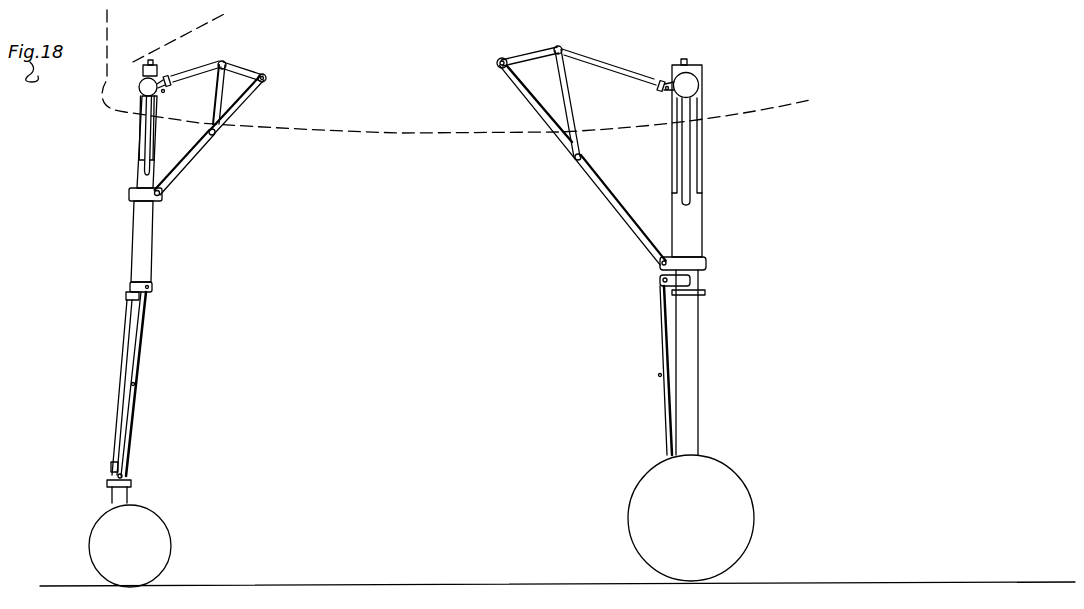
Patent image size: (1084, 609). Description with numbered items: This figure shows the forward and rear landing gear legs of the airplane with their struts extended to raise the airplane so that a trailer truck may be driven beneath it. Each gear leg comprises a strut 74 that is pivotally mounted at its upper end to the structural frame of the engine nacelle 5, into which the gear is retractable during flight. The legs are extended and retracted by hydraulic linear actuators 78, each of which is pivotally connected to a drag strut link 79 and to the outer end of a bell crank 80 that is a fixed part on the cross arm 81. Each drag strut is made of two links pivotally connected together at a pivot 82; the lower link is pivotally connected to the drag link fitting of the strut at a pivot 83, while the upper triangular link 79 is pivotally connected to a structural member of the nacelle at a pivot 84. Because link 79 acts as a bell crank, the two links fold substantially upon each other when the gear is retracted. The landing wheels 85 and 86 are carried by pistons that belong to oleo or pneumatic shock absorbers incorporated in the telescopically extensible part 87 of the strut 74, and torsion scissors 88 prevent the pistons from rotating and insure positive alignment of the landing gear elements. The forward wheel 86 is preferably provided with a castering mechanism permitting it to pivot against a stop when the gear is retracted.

The engine nacelle 5 is at (410, 135).
The strut 74 is at (150, 245).
The hydraulic linear actuator 78 is at (194, 72).
The drag strut link 79 is at (256, 102).
The bell crank 80 is at (167, 90).
The cross arm 81 is at (141, 87).
The pivotal connection 82 is at (216, 133).
The drag link fitting pivot 83 is at (162, 198).
The nacelle pivot 84 is at (268, 78).
The landing wheel 85 is at (628, 511).
The landing wheel 86 is at (171, 540).
The telescopically extensible part 87 is at (124, 350).
The torsion scissors 88 is at (130, 396).